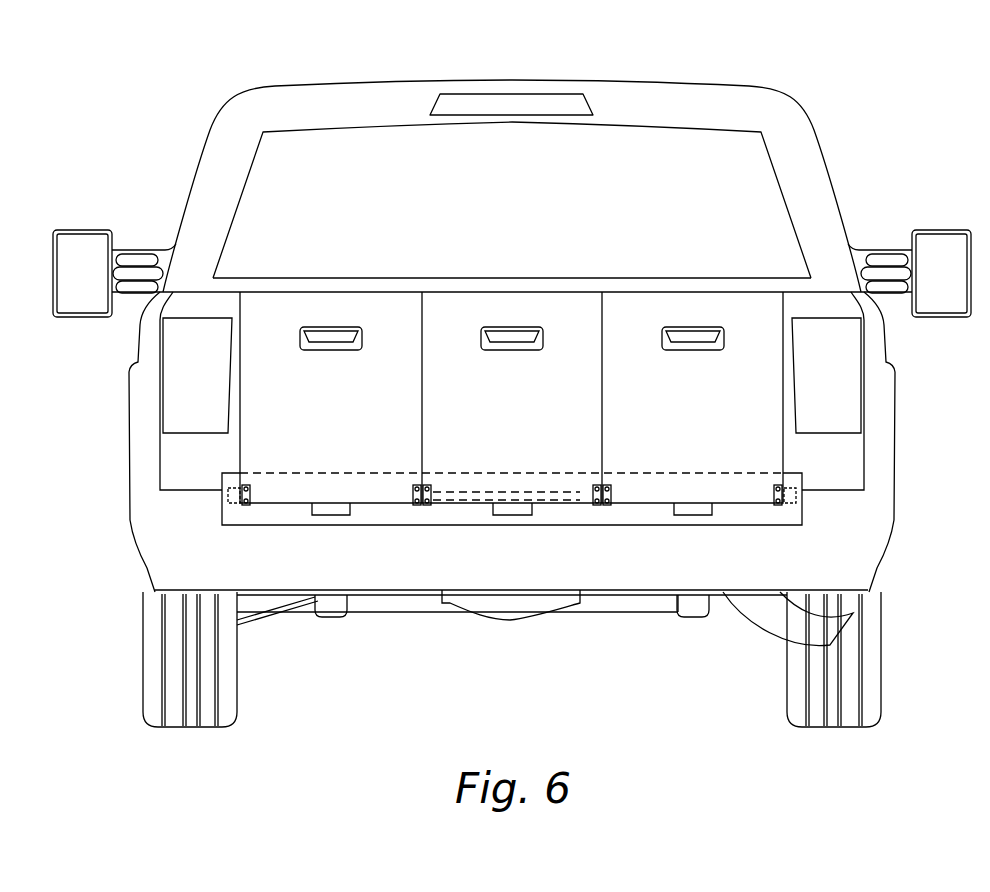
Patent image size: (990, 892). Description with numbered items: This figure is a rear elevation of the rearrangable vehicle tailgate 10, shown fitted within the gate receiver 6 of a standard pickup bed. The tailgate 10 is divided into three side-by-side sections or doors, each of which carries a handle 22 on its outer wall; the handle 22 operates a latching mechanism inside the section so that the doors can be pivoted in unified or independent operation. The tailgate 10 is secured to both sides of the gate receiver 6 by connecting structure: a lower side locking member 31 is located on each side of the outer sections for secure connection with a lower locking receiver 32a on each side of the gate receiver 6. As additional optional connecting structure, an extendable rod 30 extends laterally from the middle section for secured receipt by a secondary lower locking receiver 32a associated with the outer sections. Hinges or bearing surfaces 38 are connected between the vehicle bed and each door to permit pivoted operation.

The rearrangable vehicle tailgate 10 is at (686, 277).
The gate receiver 6 is at (238, 420).
The handle 22 is at (697, 347).
The extendable rod 30 is at (572, 498).
The lower side locking member 31 is at (243, 505).
The lower locking receiver 32a is at (238, 492).
The hinges or bearing surfaces 38 is at (680, 512).